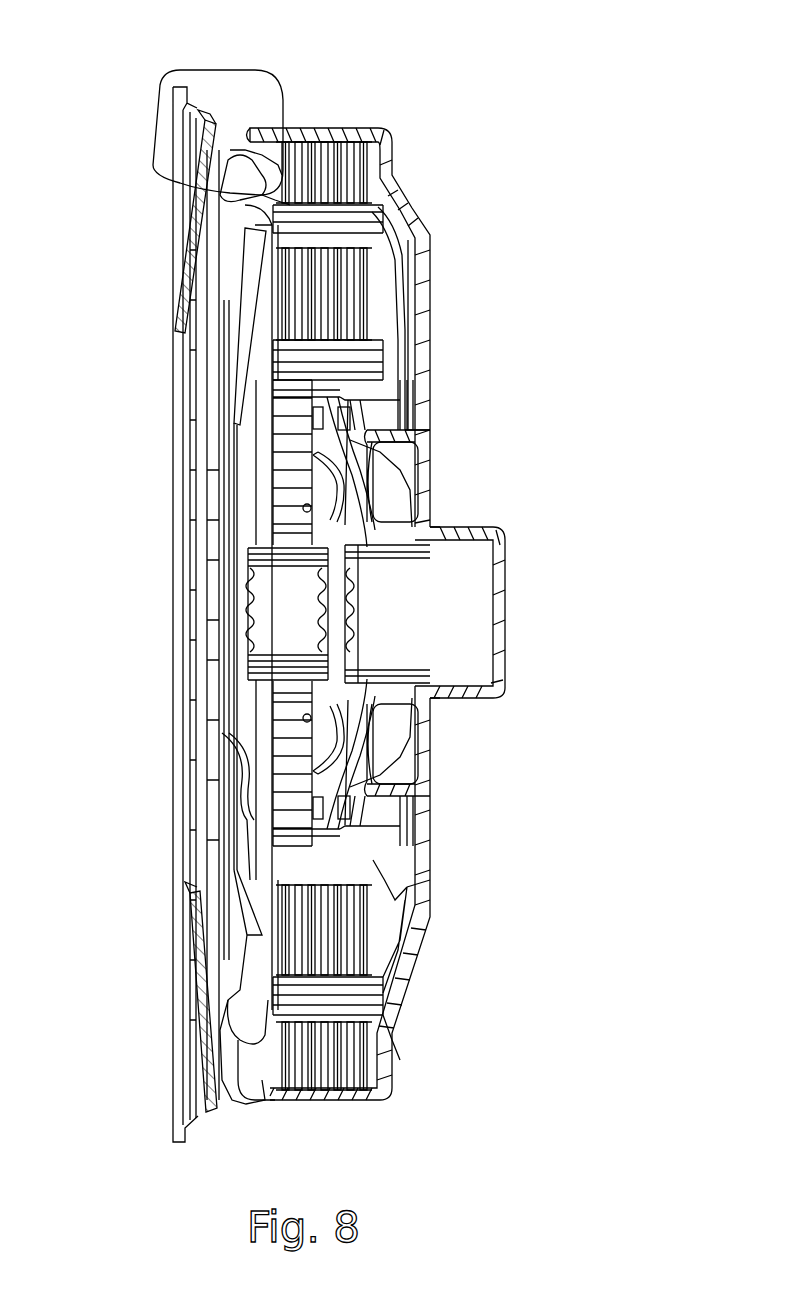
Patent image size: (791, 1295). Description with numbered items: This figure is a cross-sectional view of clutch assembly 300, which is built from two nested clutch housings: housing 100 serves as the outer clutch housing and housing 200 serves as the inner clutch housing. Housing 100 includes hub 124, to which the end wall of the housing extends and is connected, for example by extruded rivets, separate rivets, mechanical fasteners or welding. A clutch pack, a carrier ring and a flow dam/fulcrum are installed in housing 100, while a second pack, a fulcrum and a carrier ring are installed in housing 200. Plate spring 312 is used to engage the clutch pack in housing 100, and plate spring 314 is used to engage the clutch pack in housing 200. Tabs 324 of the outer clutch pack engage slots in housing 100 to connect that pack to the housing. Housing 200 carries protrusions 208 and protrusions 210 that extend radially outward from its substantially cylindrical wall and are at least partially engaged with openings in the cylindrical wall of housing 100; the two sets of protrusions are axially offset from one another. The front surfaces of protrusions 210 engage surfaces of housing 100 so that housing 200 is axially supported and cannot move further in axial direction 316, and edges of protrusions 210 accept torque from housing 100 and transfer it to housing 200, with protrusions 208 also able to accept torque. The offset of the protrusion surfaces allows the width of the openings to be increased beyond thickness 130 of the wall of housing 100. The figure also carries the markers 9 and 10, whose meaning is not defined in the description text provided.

The engine side 9 is at (155, 160).
The transmission side 10 is at (178, 1102).
The housing 100 is at (386, 1098).
The hub 124 is at (483, 693).
The thickness 130 is at (329, 126).
The housing 200 is at (418, 1006).
The protrusions 208 is at (200, 200).
The protrusions 210 is at (235, 1085).
The assembly 300 is at (548, 1096).
The plate spring 312 is at (197, 1010).
The plate spring 314 is at (243, 898).
The axial direction 316 is at (651, 646).
The tabs 324 is at (650, 608).